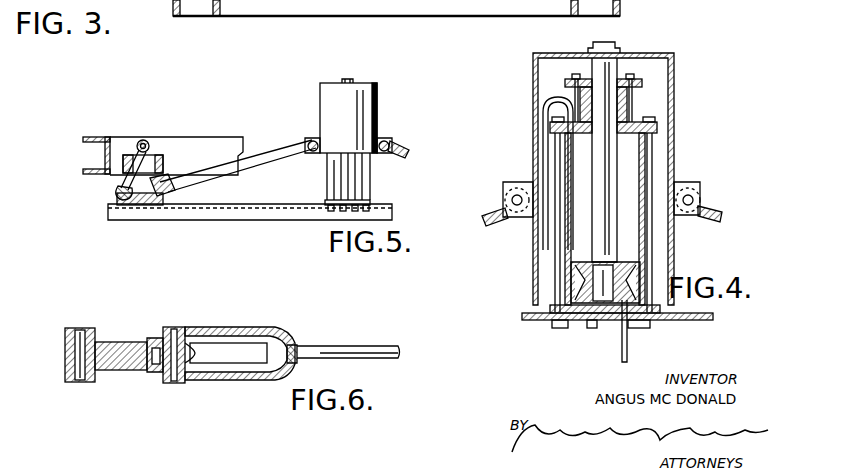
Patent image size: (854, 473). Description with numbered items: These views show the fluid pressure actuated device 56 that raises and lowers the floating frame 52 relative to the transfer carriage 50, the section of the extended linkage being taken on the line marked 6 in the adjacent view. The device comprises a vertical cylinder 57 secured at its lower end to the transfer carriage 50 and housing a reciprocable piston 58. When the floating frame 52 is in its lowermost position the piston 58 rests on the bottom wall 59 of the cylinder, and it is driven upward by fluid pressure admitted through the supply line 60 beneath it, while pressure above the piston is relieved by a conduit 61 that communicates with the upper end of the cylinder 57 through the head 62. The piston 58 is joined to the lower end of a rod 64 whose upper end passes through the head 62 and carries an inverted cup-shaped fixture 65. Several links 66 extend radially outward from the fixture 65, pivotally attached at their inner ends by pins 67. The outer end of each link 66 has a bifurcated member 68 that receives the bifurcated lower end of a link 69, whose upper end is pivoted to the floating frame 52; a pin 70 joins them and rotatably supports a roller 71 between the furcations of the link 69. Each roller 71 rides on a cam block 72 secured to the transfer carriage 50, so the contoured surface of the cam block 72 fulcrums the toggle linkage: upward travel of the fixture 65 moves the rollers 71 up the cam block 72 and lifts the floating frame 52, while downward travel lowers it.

In FIG. 5, the transfer carriage 50 is at (268, 222).
In FIG. 4, the transfer carriage 50 is at (522, 322).
In FIG. 5, the floating frame 52 is at (160, 138).
In FIG. 6, the floating frame 52 is at (72, 328).
In FIG. 5, the fluid pressure actuated device 56 is at (372, 83).
In FIG. 4, the fluid pressure actuated device 56 is at (678, 134).
In FIG. 4, the vertical cylinder 57 is at (640, 252).
In FIG. 4, the piston 58 is at (572, 302).
In FIG. 4, the bottom wall 59 is at (598, 322).
In FIG. 4, the supply line 60 is at (630, 340).
In FIG. 4, the conduit 61 is at (540, 228).
In FIG. 4, the head 62 is at (656, 120).
In FIG. 4, the rod 64 is at (606, 186).
In FIG. 5, the inverted cup-shaped fixture 65 is at (355, 107).
In FIG. 4, the inverted cup-shaped fixture 65 is at (637, 55).
In FIG. 5, the links 66 is at (305, 144).
In FIG. 6, the links 66 is at (342, 348).
In FIG. 4, the links 66 is at (503, 210).
In FIG. 5, the pins 67 is at (313, 138).
In FIG. 4, the pins 67 is at (517, 182).
In FIG. 5, the bifurcated member 68 is at (166, 195).
In FIG. 6, the bifurcated member 68 is at (232, 381).
In FIG. 5, the link 69 is at (163, 168).
In FIG. 6, the link 69 is at (125, 342).
In FIG. 6, the pin 70 is at (178, 328).
In FIG. 5, the roller 71 is at (120, 192).
In FIG. 6, the roller 71 is at (195, 382).
In FIG. 5, the cam block 72 is at (142, 203).
In FIG. 5, the section line 6- 6 is at (136, 145).